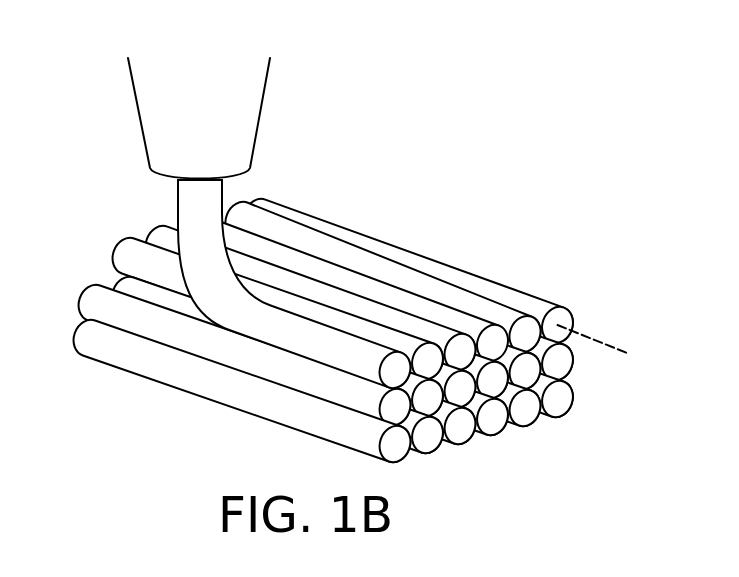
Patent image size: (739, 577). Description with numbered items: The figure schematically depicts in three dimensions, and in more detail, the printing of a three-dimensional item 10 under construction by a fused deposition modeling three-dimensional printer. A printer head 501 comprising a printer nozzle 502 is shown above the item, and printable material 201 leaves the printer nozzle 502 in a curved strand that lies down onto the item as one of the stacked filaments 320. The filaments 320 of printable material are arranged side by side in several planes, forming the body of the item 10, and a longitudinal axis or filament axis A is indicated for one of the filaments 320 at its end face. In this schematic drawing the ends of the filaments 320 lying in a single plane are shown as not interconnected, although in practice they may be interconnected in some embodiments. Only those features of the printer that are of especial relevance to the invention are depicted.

The 3D item 10 is at (326, 325).
The printable material 201 is at (208, 203).
The filament 320 is at (170, 373).
The printer head 501 is at (153, 90).
The printer nozzle 502 is at (165, 183).
The longitudinal axis A is at (590, 338).